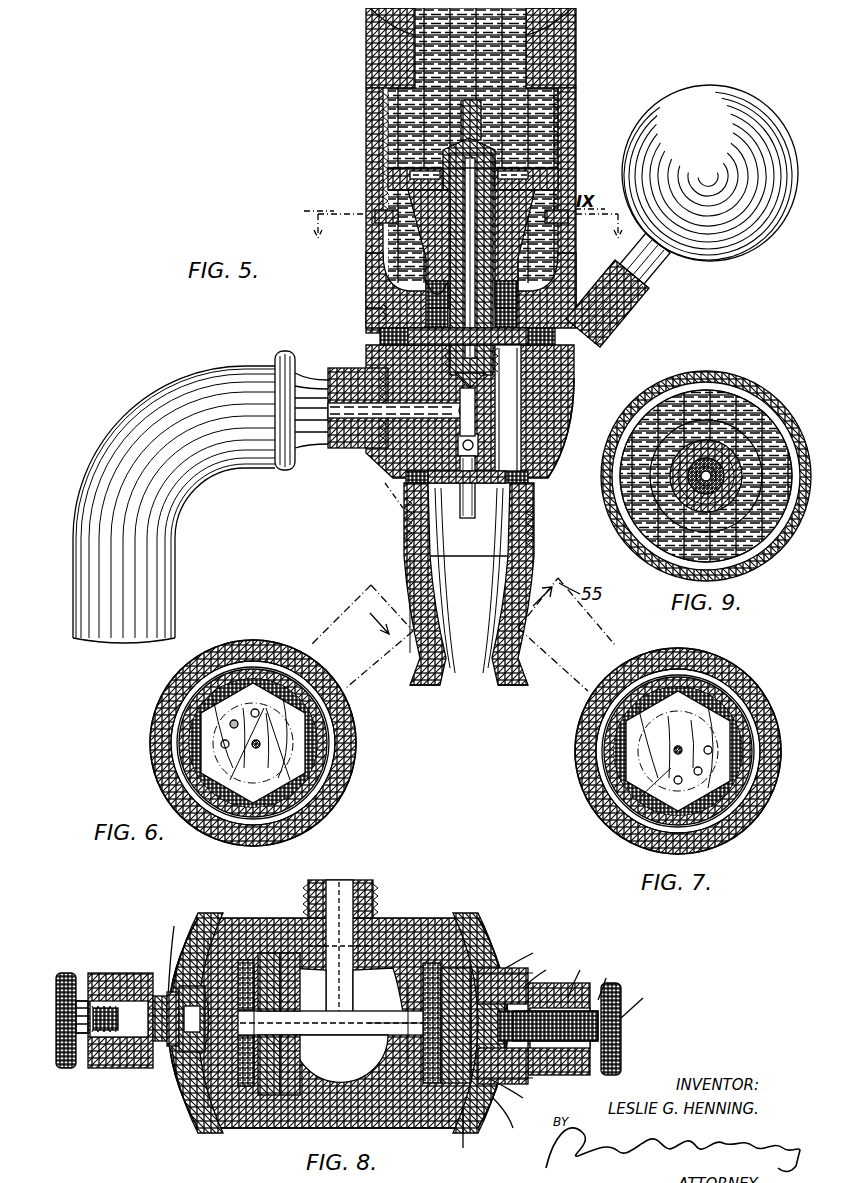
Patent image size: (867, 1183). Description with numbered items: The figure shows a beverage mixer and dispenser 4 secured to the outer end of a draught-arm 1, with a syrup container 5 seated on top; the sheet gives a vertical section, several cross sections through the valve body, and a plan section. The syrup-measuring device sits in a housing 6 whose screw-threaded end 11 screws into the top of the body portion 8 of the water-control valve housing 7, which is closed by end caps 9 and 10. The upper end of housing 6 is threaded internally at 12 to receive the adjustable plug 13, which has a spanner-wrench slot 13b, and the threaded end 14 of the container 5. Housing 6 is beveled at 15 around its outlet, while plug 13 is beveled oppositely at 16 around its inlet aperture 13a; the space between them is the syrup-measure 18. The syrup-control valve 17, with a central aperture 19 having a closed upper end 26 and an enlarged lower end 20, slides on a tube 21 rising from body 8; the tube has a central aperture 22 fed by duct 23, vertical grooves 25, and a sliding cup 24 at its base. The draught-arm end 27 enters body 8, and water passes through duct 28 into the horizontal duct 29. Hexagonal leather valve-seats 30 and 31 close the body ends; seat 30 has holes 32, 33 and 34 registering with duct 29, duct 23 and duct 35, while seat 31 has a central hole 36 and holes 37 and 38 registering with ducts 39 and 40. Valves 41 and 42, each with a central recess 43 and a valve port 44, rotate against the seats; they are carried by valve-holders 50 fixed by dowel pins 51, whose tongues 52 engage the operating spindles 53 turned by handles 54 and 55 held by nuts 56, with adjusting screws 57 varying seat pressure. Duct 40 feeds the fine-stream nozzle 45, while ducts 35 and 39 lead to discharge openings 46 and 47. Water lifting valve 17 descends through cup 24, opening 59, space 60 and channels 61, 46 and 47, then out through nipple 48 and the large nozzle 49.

In FIG. 5, the draught-arm 1 is at (70, 474).
In FIG. 8, the draught-arm 1 is at (322, 874).
In FIG. 5, the mixer and dispenser 4 is at (484, 584).
In FIG. 5, the syrup container 5 is at (360, 8).
In FIG. 5, the housing of syrup-measuring device 6 is at (395, 150).
In FIG. 9, the housing of syrup-measuring device 6 is at (712, 430).
In FIG. 5, the housing of water-control valve 7 is at (562, 368).
In FIG. 6, the housing of water-control valve 7 is at (322, 750).
In FIG. 7, the housing of water-control valve 7 is at (592, 750).
In FIG. 8, the housing of water-control valve 7 is at (385, 1120).
In FIG. 5, the body portion 8 is at (556, 388).
In FIG. 6, the body portion 8 is at (323, 764).
In FIG. 7, the body portion 8 is at (606, 795).
In FIG. 8, the body portion 8 is at (372, 1120).
In FIG. 6, the end cap 9 is at (256, 638).
In FIG. 8, the end cap 9 is at (186, 915).
In FIG. 7, the end cap 10 is at (736, 686).
In FIG. 8, the end cap 10 is at (480, 935).
In FIG. 5, the screw-threaded end 11 is at (380, 310).
In FIG. 5, the internal thread 12 is at (455, 126).
In FIG. 5, the adjustable plug 13 is at (385, 172).
In FIG. 5, the aperture 13a is at (388, 180).
In FIG. 5, the spanner-wrench slot 13b is at (395, 152).
In FIG. 5, the threaded end 14 is at (372, 54).
In FIG. 5, the beveled surface 15 is at (385, 275).
In FIG. 9, the beveled surface 15 is at (715, 392).
In FIG. 5, the beveled surface 16 is at (378, 209).
In FIG. 5, the syrup-control valve 17 is at (480, 185).
In FIG. 9, the syrup-control valve 17 is at (678, 452).
In FIG. 5, the syrup-measure 18 is at (410, 236).
In FIG. 9, the syrup-measure 18 is at (752, 530).
In FIG. 5, the central longitudinal aperture 19 is at (487, 192).
In FIG. 9, the central longitudinal aperture 19 is at (712, 462).
In FIG. 5, the enlarged lower end of aperture 20 is at (425, 286).
In FIG. 5, the tube 21 is at (440, 162).
In FIG. 9, the tube 21 is at (692, 480).
In FIG. 5, the central aperture of tube 22 is at (447, 148).
In FIG. 9, the central aperture of tube 22 is at (693, 472).
In FIG. 6, the duct 23 is at (282, 712).
In FIG. 5, the cup 24 is at (430, 302).
In FIG. 5, the vertical grooves 25 is at (540, 192).
In FIG. 9, the vertical grooves 25 is at (690, 496).
In FIG. 5, the closed upper end 26 is at (492, 152).
In FIG. 5, the end of draught-arm 27 is at (350, 365).
In FIG. 8, the end of draught-arm 27 is at (350, 876).
In FIG. 5, the duct 28 is at (377, 490).
In FIG. 8, the duct 28 is at (355, 942).
In FIG. 5, the horizontal duct 29 is at (466, 402).
In FIG. 6, the horizontal duct 29 is at (245, 742).
In FIG. 7, the horizontal duct 29 is at (666, 741).
In FIG. 8, the horizontal duct 29 is at (292, 1028).
In FIG. 6, the leather valve-seat 30 is at (318, 800).
In FIG. 8, the leather valve-seat 30 is at (250, 1080).
In FIG. 7, the leather valve-seat 31 is at (694, 765).
In FIG. 8, the leather valve-seat 31 is at (445, 1078).
In FIG. 6, the hole 32 is at (252, 745).
In FIG. 8, the hole 32 is at (240, 1080).
In FIG. 6, the hole 33 is at (249, 702).
In FIG. 6, the hole 34 is at (213, 737).
In FIG. 8, the hole 34 is at (258, 945).
In FIG. 6, the duct 35 is at (222, 716).
In FIG. 8, the duct 35 is at (280, 945).
In FIG. 7, the central hole 36 is at (665, 738).
In FIG. 8, the central hole 36 is at (425, 1078).
In FIG. 7, the hole 37 is at (738, 713).
In FIG. 8, the hole 37 is at (448, 960).
In FIG. 7, the hole 38 is at (632, 800).
In FIG. 7, the duct 39 is at (704, 742).
In FIG. 8, the duct 39 is at (405, 975).
In FIG. 5, the duct 40 is at (470, 440).
In FIG. 7, the duct 40 is at (668, 777).
In FIG. 6, the valve 41 is at (232, 668).
In FIG. 8, the valve 41 is at (212, 1100).
In FIG. 7, the valve 42 is at (717, 668).
In FIG. 8, the recess 43 is at (185, 1048).
In FIG. 6, the valve port 44 is at (176, 680).
In FIG. 7, the valve port 44 is at (720, 803).
In FIG. 5, the fine-stream nozzle 45 is at (470, 491).
In FIG. 8, the discharge opening 46 is at (302, 990).
In FIG. 5, the discharge opening 47 is at (400, 522).
In FIG. 8, the discharge opening 47 is at (414, 1065).
In FIG. 5, the nipple 48 is at (400, 537).
In FIG. 5, the large nozzle 49 is at (452, 674).
In FIG. 8, the valve-holder 50 is at (190, 1095).
In FIG. 8, the dowel pin 51 is at (175, 1085).
In FIG. 8, the tongue 52 is at (188, 975).
In FIG. 8, the valve-operating spindle 53 is at (120, 998).
In FIG. 5, the operating handle 54 is at (362, 578).
In FIG. 8, the operating handle 54 is at (162, 985).
In FIG. 5, the operating handle 55 is at (612, 284).
In FIG. 8, the operating handle 55 is at (530, 965).
In FIG. 8, the nut 56 is at (100, 968).
In FIG. 8, the adjusting screw 57 is at (56, 968).
In FIG. 5, the opening 59 is at (583, 320).
In FIG. 5, the space 60 is at (555, 333).
In FIG. 5, the channel 61 is at (505, 420).
In FIG. 8, the channel 61 is at (340, 1058).